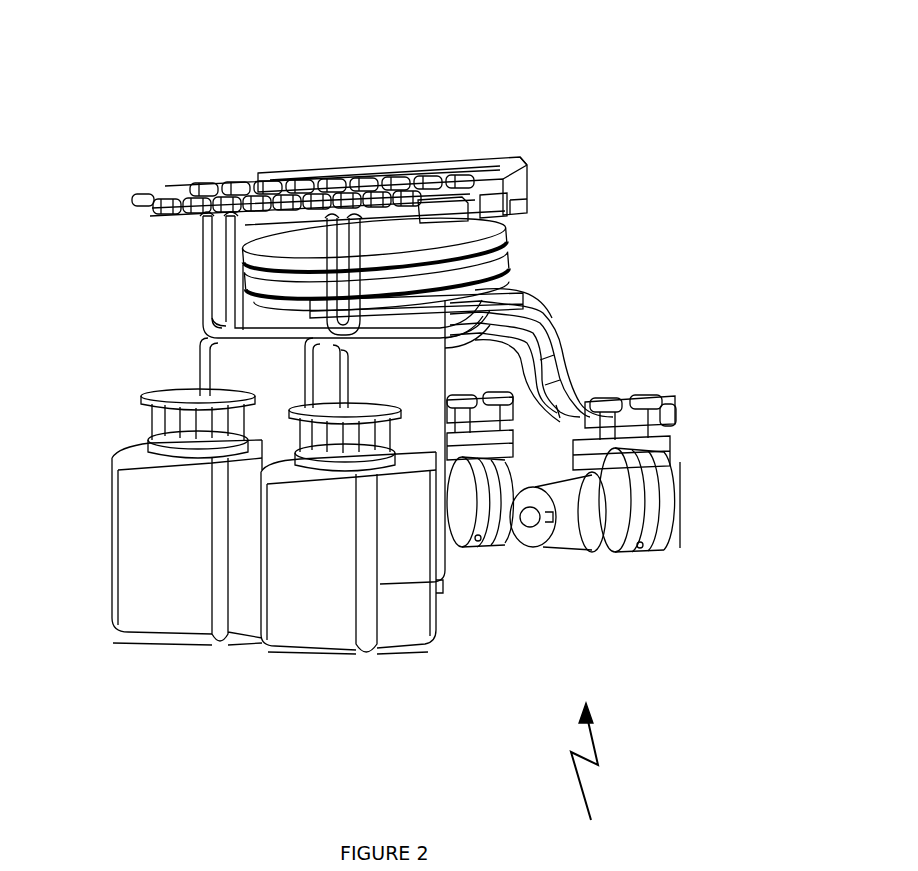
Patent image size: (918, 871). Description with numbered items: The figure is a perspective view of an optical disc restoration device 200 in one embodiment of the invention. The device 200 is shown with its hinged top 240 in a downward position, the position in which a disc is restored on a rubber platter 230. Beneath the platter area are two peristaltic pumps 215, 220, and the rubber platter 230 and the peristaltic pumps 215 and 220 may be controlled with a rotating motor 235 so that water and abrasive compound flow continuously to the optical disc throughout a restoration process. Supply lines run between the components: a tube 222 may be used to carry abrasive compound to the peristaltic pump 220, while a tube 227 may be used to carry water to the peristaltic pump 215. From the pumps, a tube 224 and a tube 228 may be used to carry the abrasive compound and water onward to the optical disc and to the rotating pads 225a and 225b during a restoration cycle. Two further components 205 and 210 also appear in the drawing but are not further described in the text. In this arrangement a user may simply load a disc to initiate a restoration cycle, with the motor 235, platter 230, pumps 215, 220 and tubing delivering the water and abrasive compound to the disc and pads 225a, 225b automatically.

The device 200 is at (604, 763).
The first reservoir bottle 205 is at (307, 633).
The second reservoir bottle 210 is at (155, 610).
The peristaltic pump 215 is at (642, 562).
The peristaltic pump 220 is at (498, 560).
The tube 222 is at (201, 350).
The tube 224 is at (204, 290).
The rotating pad 225a is at (490, 260).
The rotating pad 225b is at (203, 224).
The tube 227 is at (343, 370).
The tube 228 is at (310, 353).
The rubber platter 230 is at (490, 273).
The rotating motor 235 is at (498, 310).
The hinged top 240 is at (500, 162).